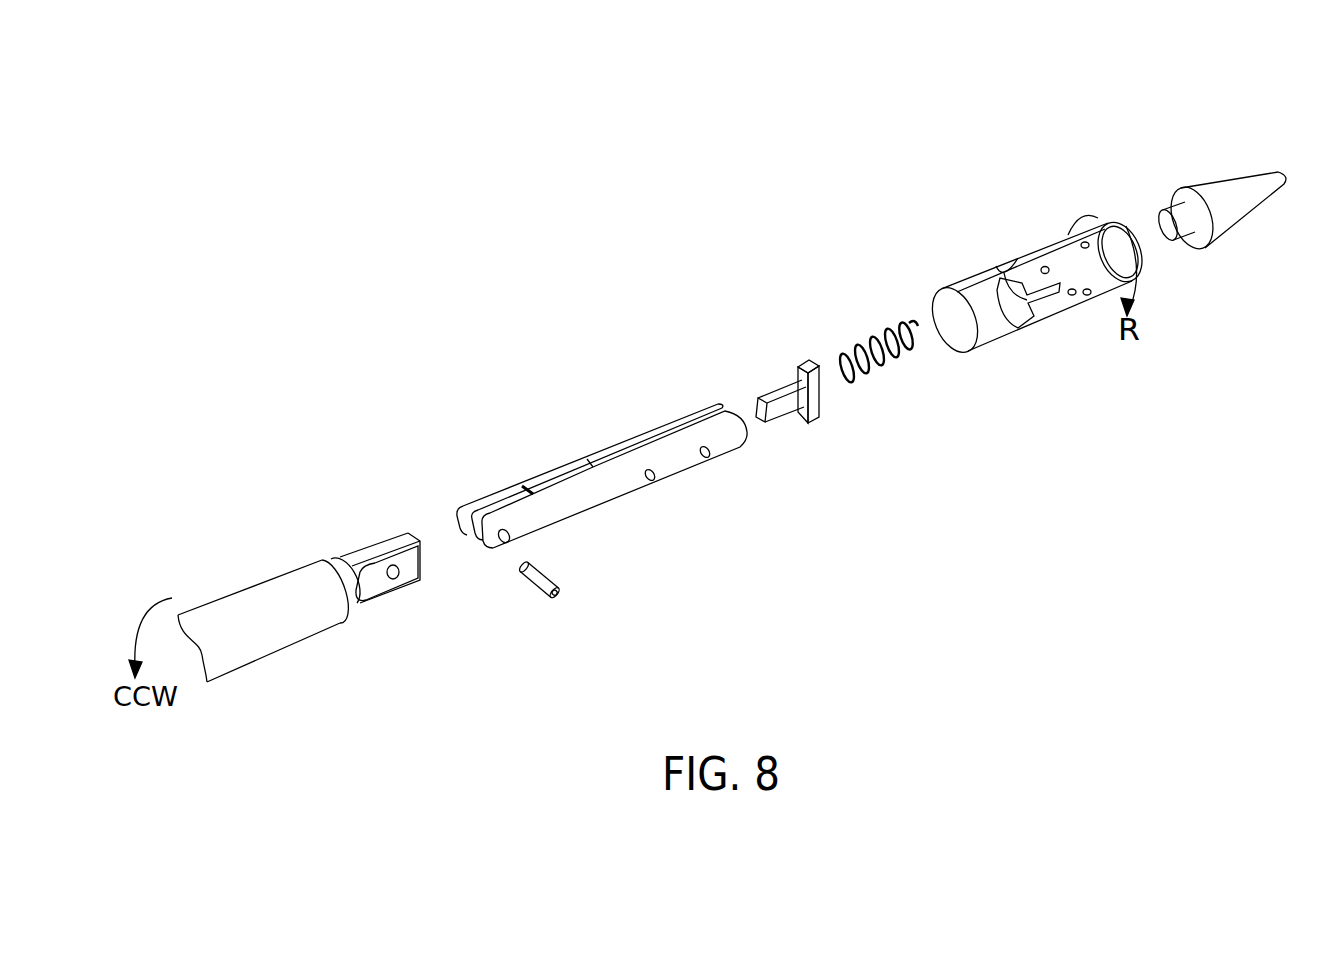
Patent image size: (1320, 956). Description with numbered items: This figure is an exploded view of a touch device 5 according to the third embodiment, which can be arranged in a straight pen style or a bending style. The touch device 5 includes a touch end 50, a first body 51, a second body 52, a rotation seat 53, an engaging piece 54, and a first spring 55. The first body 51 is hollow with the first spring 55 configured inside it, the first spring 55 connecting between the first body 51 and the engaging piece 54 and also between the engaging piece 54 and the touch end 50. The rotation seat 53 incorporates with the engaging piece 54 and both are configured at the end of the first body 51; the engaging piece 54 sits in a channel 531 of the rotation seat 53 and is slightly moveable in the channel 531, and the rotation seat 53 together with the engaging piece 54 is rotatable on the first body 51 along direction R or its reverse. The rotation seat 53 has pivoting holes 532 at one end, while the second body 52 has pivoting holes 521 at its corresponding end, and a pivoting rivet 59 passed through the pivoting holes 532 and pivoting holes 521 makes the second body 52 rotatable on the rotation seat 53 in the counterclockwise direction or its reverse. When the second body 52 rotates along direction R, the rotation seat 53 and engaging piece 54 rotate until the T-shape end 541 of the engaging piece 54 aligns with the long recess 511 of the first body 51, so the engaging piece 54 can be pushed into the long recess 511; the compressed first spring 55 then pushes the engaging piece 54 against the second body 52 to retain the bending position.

The touch device 5 is at (588, 160).
The touch end 50 is at (1228, 193).
The first body 51 is at (1032, 301).
The long recess 511 is at (1040, 318).
The second body 52 is at (329, 598).
The pivoting holes 521 is at (396, 576).
The rotation seat 53 is at (602, 455).
The channel 531 is at (700, 416).
The pivoting holes 532 is at (506, 540).
The engaging piece 54 is at (792, 393).
The T-shape end 541 is at (807, 360).
The first spring 55 is at (887, 365).
The pivoting rivet 59 is at (558, 600).